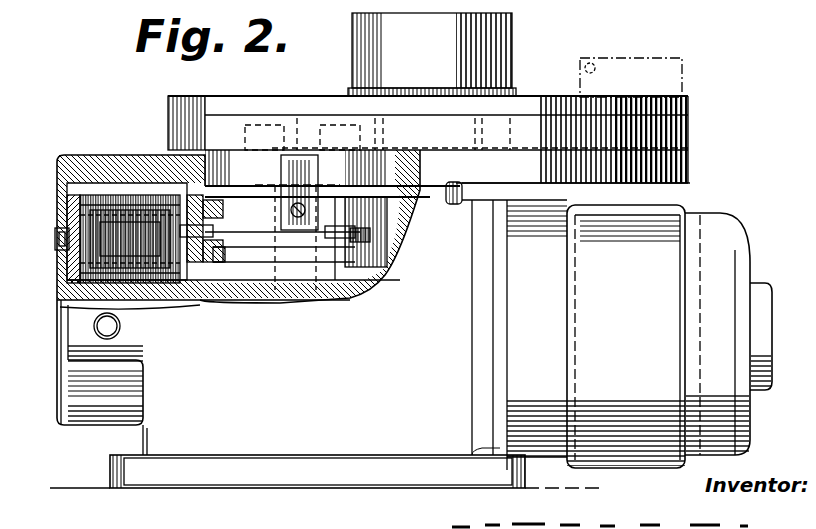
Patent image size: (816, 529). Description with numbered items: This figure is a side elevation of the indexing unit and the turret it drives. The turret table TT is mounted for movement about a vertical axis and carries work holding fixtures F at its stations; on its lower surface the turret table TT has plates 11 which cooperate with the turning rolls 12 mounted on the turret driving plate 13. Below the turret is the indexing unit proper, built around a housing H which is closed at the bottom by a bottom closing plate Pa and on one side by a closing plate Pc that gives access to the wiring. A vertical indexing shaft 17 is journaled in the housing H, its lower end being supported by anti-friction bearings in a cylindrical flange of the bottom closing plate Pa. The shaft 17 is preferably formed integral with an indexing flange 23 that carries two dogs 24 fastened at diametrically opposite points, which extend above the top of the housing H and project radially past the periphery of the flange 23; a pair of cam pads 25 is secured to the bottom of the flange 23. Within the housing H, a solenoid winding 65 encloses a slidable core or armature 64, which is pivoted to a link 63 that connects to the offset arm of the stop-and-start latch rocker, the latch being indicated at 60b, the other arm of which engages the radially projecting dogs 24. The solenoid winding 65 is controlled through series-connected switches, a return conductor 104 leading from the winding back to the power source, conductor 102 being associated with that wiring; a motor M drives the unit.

The work holding fixtures F is at (641, 68).
The turret table TT is at (680, 110).
The turning rolls 12 is at (245, 130).
The plates 11 is at (297, 125).
The return conductor 104 is at (93, 170).
The housing part 102 is at (140, 170).
The solenoid winding 65 is at (140, 298).
The core or armature 64 is at (213, 293).
The link 63 is at (249, 248).
The vertical indexing shaft 17 is at (313, 227).
The turret driving plate 13 is at (358, 178).
The screw 60b is at (362, 208).
The indexing flange 23 is at (365, 218).
The cam pads 25 is at (380, 232).
The dogs 24 is at (352, 237).
The closing plate Pc is at (62, 318).
The housing H is at (385, 432).
The bottom closing plate Pa is at (218, 478).
The motor M is at (663, 238).